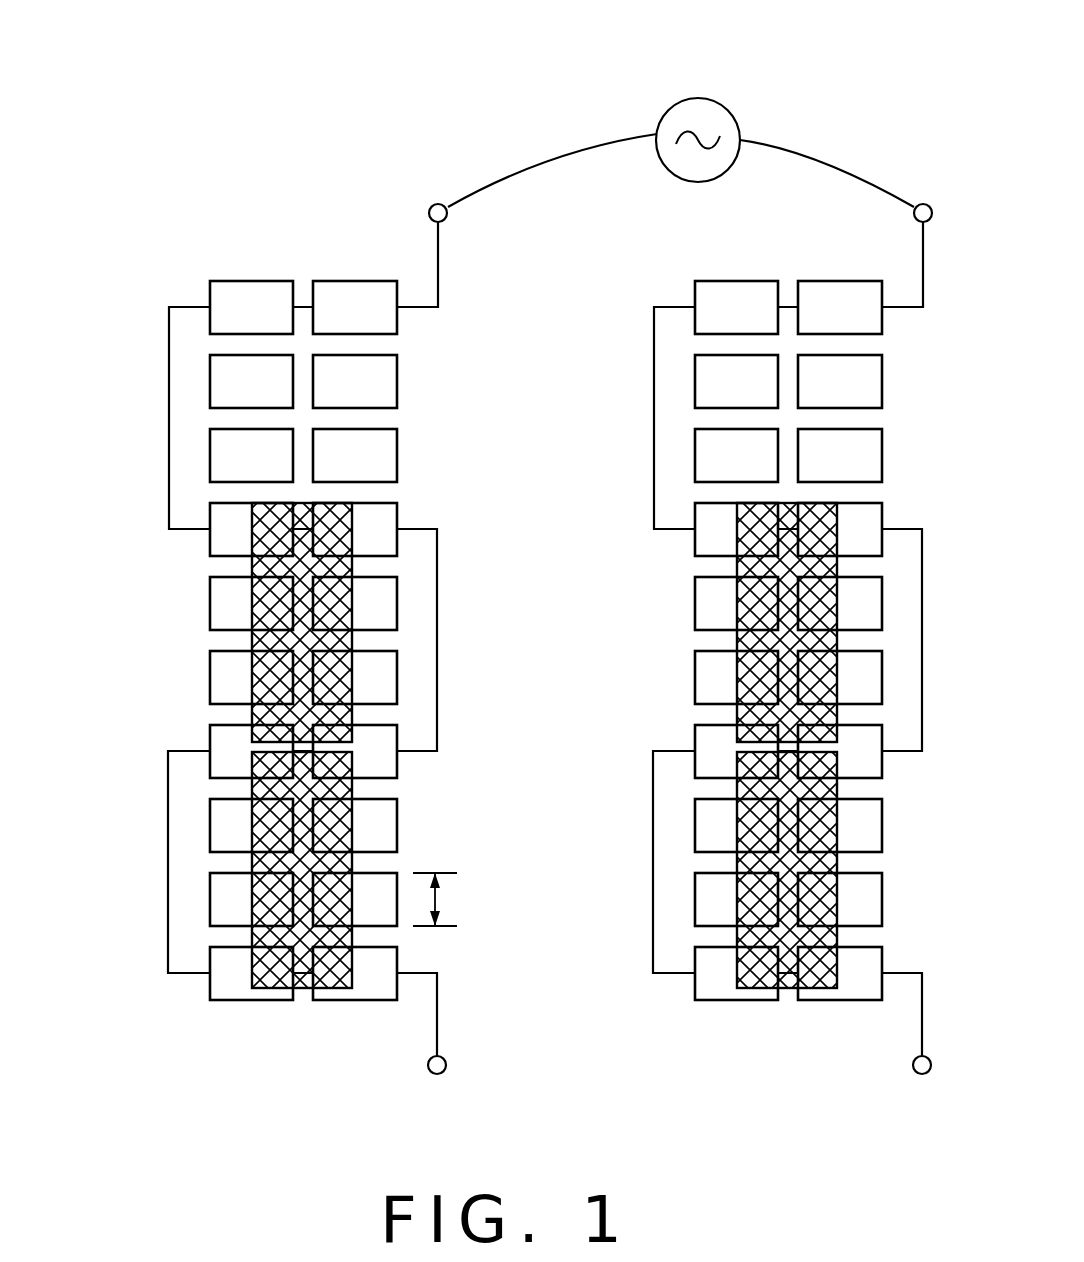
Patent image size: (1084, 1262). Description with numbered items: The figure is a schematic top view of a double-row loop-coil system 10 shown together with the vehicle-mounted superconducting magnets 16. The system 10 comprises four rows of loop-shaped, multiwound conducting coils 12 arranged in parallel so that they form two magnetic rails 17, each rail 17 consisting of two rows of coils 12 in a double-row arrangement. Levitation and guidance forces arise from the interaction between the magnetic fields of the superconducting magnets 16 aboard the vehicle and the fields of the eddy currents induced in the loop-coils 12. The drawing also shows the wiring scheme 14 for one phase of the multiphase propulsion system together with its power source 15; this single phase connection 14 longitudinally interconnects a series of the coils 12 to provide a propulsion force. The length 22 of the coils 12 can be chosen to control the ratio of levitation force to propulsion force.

The double-row loop-coil system 10 is at (712, 264).
The loop-shaped multiwound conducting coils 12 is at (210, 293).
The wiring scheme 14 is at (168, 507).
The power source 15 is at (703, 98).
The superconducting magnets 16 is at (252, 640).
The magnetic rail 17 is at (368, 1000).
The length of the coils 22 is at (461, 899).